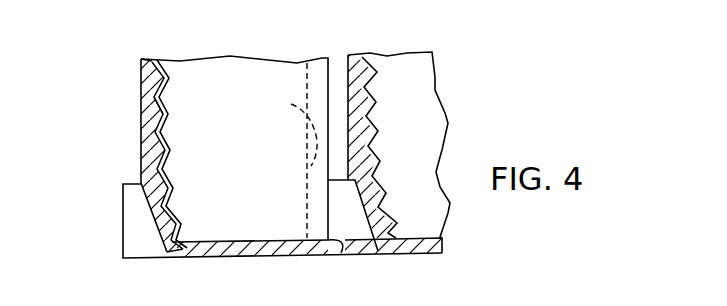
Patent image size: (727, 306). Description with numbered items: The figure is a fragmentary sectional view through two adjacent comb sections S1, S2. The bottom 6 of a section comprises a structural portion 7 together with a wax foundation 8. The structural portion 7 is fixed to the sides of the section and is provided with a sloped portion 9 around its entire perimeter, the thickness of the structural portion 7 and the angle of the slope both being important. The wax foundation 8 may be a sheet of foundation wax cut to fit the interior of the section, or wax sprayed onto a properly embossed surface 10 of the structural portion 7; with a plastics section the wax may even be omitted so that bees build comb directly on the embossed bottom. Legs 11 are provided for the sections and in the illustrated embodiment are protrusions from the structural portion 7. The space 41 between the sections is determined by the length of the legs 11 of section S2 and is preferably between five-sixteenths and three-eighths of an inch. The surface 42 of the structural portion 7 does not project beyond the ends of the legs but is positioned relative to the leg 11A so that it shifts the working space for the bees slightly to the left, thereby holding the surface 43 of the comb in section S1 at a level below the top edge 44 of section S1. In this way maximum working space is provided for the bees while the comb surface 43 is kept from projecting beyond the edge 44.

The bottom 6 is at (140, 97).
The structural portion 7 is at (148, 132).
The wax foundation 8 is at (172, 136).
The sloped portion 9 is at (148, 215).
The embossed surface 10 is at (166, 97).
The legs 11 is at (134, 219).
The leg 11A is at (345, 217).
The space 41 is at (363, 242).
The surface 42 is at (348, 86).
The surface of the comb 43 is at (289, 150).
The top edge 44 is at (343, 250).
The section S1 is at (201, 70).
The section S2 is at (393, 65).